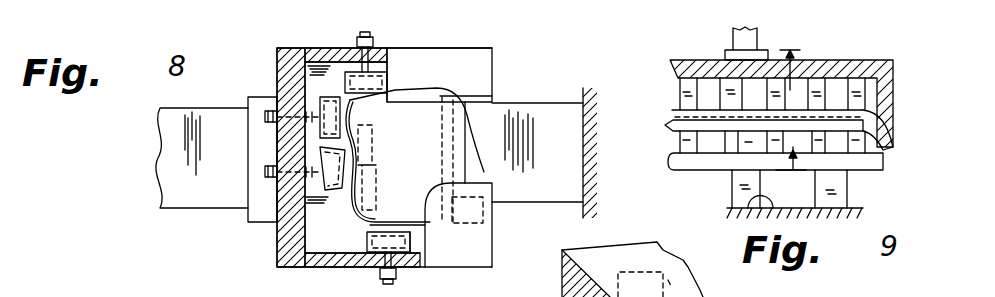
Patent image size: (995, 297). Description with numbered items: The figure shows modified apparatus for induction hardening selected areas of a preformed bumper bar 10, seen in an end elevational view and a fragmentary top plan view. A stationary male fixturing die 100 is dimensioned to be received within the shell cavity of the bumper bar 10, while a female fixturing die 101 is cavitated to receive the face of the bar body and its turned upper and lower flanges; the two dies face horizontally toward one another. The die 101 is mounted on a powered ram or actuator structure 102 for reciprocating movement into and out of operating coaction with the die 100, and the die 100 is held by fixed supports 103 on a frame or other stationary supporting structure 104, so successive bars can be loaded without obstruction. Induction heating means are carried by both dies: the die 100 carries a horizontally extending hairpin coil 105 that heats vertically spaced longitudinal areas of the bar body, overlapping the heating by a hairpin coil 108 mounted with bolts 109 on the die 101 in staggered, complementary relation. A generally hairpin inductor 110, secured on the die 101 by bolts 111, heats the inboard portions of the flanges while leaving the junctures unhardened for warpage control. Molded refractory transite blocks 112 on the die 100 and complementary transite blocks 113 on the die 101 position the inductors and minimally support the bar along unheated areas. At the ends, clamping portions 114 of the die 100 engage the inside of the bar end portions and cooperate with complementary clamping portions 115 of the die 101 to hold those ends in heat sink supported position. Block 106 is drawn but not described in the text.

In FIG. 8, the bumper bar 10 is at (355, 224).
In FIG. 9, the bumper bar 10 is at (669, 116).
In FIG. 8, the stationary male fixturing die 100 is at (470, 95).
In FIG. 9, the stationary male fixturing die 100 is at (697, 162).
In FIG. 8, the female fixturing die 101 is at (292, 238).
In FIG. 9, the female fixturing die 101 is at (703, 38).
In FIG. 8, the powered ram or actuator structure 102 is at (157, 191).
In FIG. 9, the powered ram or actuator structure 102 is at (731, 44).
In FIG. 8, the fixed supports 103 is at (530, 193).
In FIG. 9, the fixed supports 103 is at (826, 181).
In FIG. 8, the stationary supporting structure 104 is at (583, 125).
In FIG. 9, the stationary supporting structure 104 is at (743, 210).
In FIG. 8, the hairpin coil 105 is at (380, 143).
In FIG. 8, the block 106 is at (458, 225).
In FIG. 8, the hairpin coil 108 is at (335, 143).
In FIG. 8, the bolts 109 is at (267, 170).
In FIG. 8, the hairpin inductor 110 is at (390, 78).
In FIG. 9, the bolts 111 is at (690, 296).
In FIG. 9, the transite blocks 112 is at (728, 140).
In FIG. 8, the transite blocks 113 is at (303, 76).
In FIG. 9, the transite blocks 113 is at (817, 87).
In FIG. 9, the clamping portions 114 is at (873, 153).
In FIG. 9, the clamping portions 115 is at (893, 130).